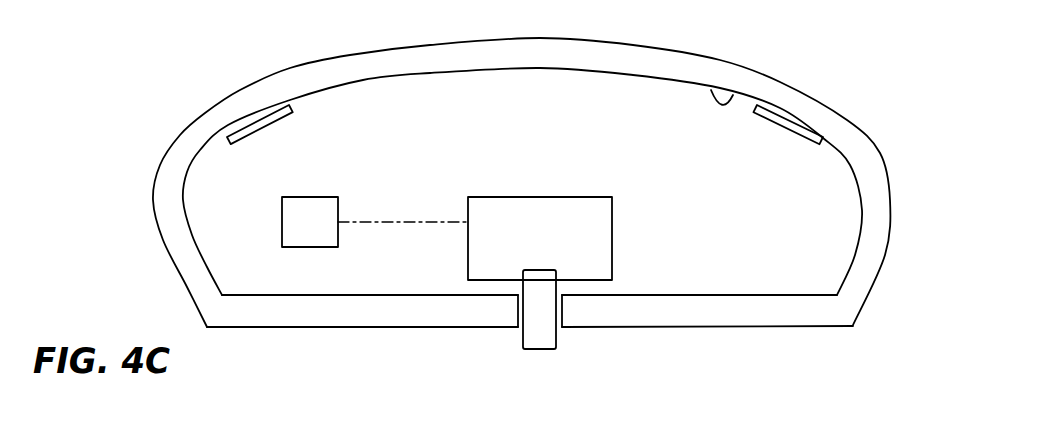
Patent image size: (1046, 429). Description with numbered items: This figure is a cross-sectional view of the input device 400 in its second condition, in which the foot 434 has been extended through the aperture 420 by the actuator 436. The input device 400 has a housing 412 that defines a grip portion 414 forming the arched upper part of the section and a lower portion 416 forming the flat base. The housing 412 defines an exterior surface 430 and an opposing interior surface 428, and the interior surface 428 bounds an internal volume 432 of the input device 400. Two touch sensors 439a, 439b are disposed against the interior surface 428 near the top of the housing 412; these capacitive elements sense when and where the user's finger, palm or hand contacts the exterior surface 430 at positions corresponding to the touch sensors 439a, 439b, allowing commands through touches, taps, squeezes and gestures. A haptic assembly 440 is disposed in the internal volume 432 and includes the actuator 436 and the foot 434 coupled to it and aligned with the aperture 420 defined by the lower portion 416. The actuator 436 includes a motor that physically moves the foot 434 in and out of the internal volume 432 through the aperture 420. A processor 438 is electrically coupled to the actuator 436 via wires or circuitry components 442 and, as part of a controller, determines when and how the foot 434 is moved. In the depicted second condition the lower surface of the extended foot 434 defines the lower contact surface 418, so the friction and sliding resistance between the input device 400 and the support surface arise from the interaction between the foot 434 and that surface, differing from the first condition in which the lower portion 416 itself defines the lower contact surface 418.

The input device 400 is at (84, 182).
The housing 412 is at (802, 100).
The grip portion 414 is at (198, 119).
The lower portion 416 is at (286, 314).
The lower contact surface 418 is at (539, 350).
The aperture 420 is at (565, 335).
The interior surface 428 is at (733, 96).
The exterior surface 430 is at (310, 64).
The internal volume 432 is at (842, 190).
The foot 434 is at (542, 283).
The actuator 436 is at (602, 222).
The processor 438 is at (282, 222).
The touch sensor 439a is at (258, 123).
The touch sensor 439b is at (793, 127).
The haptic assembly 440 is at (558, 165).
The wires or circuitry components 442 is at (368, 221).